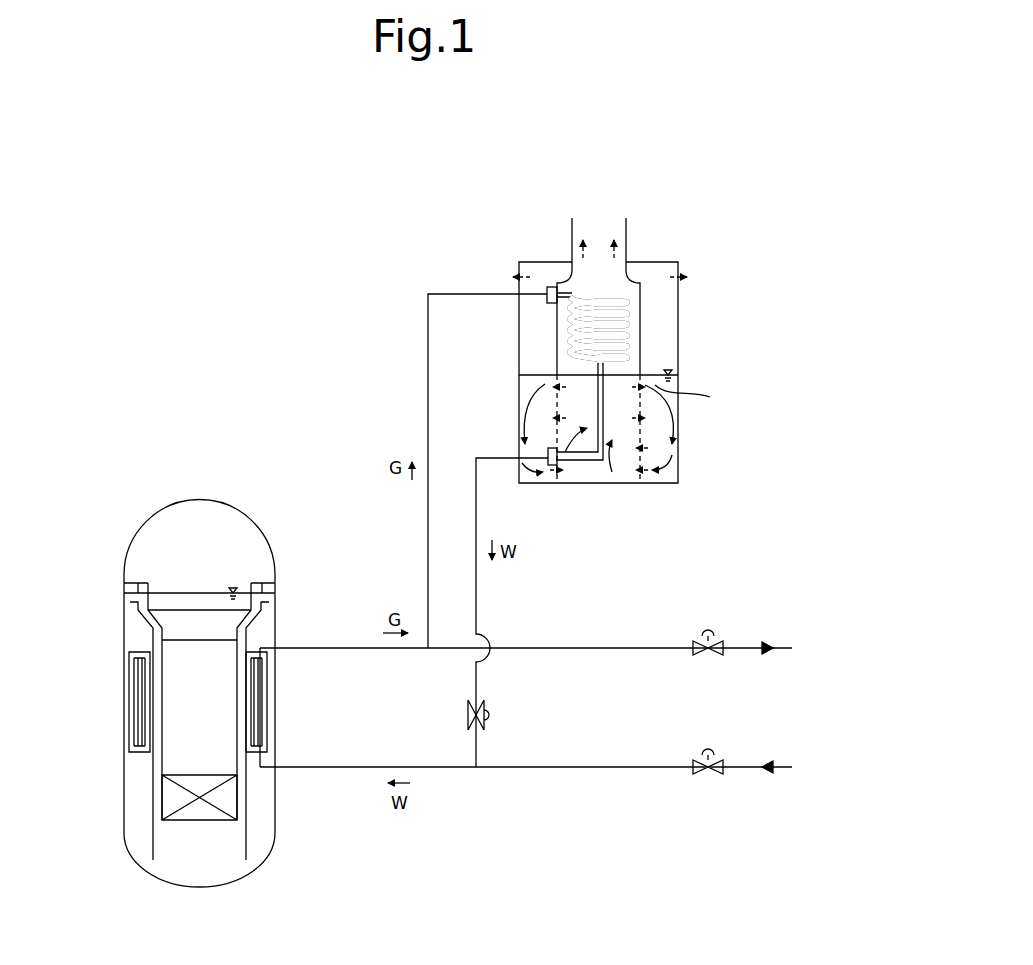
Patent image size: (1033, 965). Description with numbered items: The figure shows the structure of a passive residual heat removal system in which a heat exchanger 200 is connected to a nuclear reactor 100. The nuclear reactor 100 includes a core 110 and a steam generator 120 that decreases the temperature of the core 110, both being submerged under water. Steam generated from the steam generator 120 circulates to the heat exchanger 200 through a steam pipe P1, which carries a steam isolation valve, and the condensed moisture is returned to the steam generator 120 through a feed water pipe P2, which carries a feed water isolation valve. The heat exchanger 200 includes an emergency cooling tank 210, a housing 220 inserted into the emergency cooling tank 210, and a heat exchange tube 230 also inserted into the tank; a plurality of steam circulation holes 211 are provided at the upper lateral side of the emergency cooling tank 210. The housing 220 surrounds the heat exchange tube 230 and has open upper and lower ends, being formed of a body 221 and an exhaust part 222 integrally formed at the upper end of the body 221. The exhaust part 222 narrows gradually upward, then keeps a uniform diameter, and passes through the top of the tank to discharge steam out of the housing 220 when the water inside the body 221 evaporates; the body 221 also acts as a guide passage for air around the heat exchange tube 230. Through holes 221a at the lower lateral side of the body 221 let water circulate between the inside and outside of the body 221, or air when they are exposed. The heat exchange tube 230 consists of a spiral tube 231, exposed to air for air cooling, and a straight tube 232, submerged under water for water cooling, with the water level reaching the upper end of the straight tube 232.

The nuclear reactor 100 is at (160, 490).
The core 110 is at (168, 805).
The steam generator 120 is at (135, 704).
The heat exchanger 200 is at (616, 208).
The emergency cooling tank 210 is at (679, 332).
The steam circulation holes 211 is at (684, 273).
The housing 220 is at (562, 186).
The body 221 is at (556, 333).
The through holes 221a is at (645, 450).
The exhaust part 222 is at (571, 243).
The heat exchange tube 230 is at (640, 540).
The spiral tube 231 is at (620, 455).
The straight tube 232 is at (576, 465).
The steam pipe P1 is at (360, 648).
The feed water pipe P2 is at (476, 752).